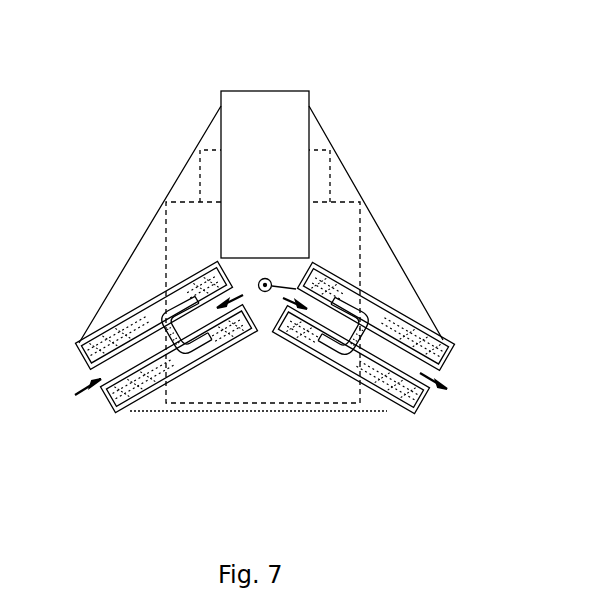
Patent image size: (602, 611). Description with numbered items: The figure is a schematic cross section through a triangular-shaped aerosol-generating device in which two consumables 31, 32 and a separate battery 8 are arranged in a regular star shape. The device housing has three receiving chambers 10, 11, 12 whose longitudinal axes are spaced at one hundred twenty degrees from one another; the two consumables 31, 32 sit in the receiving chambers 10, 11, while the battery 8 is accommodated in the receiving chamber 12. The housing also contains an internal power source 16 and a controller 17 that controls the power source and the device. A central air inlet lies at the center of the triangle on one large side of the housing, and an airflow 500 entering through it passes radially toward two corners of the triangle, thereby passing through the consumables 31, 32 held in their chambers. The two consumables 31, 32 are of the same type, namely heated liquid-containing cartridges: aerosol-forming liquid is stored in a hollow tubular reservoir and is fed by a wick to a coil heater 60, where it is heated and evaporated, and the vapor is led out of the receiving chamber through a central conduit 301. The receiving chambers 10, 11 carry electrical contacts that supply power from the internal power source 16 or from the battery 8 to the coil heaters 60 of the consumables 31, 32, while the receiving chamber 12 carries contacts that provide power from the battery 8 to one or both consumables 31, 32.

The battery 8 is at (278, 110).
The receiving chamber 10 is at (155, 292).
The receiving chamber 11 is at (321, 375).
The receiving chamber 12 is at (310, 135).
The internal power source 16 is at (353, 223).
The controller 17 is at (325, 172).
The consumable 31 is at (390, 403).
The consumable 32 is at (113, 413).
The coil heater 60 is at (137, 307).
The central conduit 301 is at (123, 360).
The airflow 500 is at (335, 272).